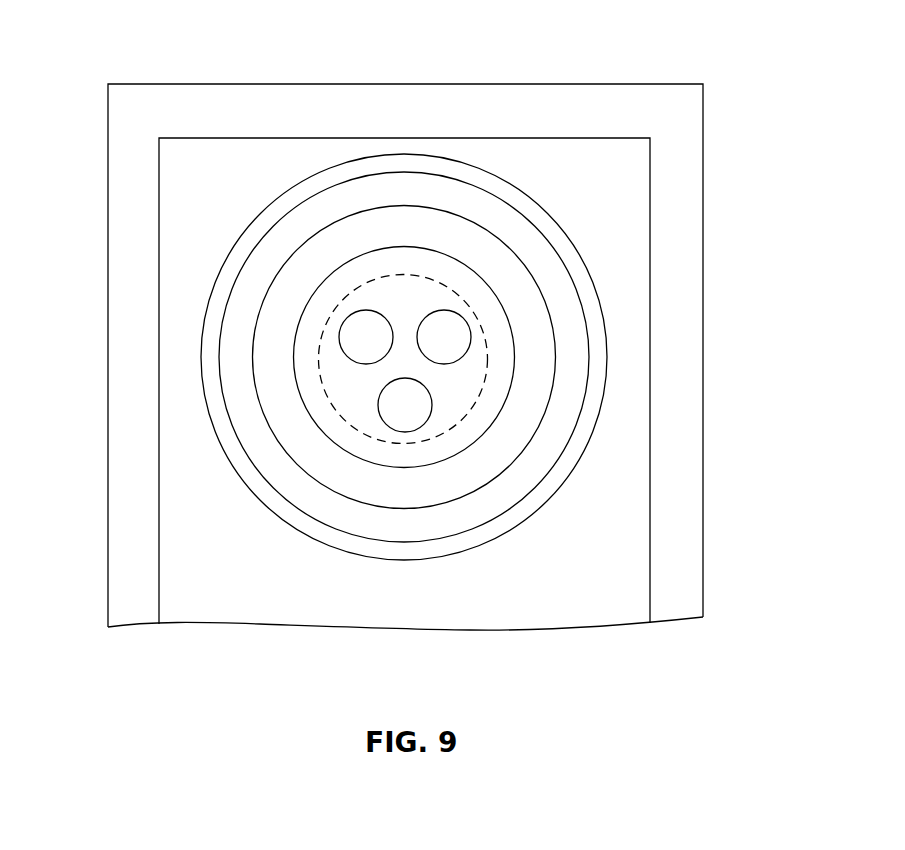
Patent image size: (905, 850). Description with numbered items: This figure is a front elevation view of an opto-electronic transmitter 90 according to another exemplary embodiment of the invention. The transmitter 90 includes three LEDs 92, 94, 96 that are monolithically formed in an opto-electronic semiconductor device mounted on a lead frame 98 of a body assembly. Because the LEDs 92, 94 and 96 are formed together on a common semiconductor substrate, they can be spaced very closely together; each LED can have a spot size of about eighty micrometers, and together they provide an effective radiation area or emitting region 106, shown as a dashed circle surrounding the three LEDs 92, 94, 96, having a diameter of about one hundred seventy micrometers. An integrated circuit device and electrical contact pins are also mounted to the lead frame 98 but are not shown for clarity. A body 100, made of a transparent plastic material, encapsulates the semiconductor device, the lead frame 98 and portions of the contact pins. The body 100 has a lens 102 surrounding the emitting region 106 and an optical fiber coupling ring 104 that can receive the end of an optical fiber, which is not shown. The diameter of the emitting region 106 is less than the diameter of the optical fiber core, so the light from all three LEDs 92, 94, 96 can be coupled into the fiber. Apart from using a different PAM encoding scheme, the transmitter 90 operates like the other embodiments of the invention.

The opto-electronic transmitter 90 is at (760, 50).
The LED 92 is at (343, 322).
The LED 94 is at (379, 400).
The LED 96 is at (465, 355).
The lead frame 98 is at (159, 556).
The body 100 is at (703, 578).
The lens 102 is at (493, 420).
The optical fiber coupling ring 104 is at (572, 242).
The emitting region 106 is at (402, 443).